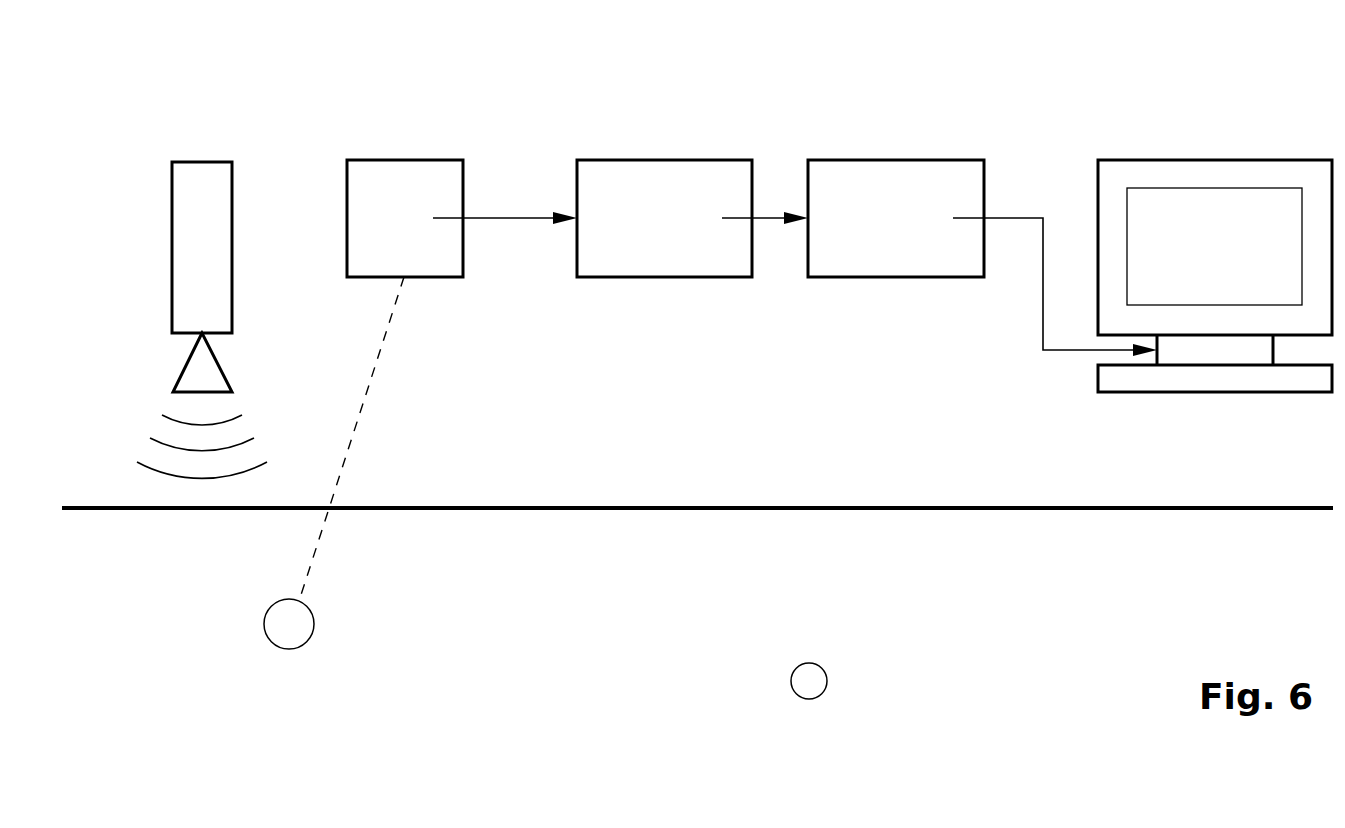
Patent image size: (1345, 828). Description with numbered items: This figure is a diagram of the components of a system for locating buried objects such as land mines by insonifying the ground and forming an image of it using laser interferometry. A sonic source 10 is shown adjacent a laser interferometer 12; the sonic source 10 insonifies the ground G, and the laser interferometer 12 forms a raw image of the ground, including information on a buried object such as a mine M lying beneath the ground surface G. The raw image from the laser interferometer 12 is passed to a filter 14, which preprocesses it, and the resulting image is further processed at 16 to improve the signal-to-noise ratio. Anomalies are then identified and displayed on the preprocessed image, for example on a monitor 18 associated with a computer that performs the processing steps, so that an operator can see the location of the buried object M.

The sonic source 10 is at (198, 156).
The laser interferometer 12 is at (402, 156).
The filter 14 is at (663, 156).
The further processing stage 16 is at (898, 156).
The monitor 18 is at (1199, 156).
The ground surface G is at (630, 503).
The buried object / mine M is at (315, 644).